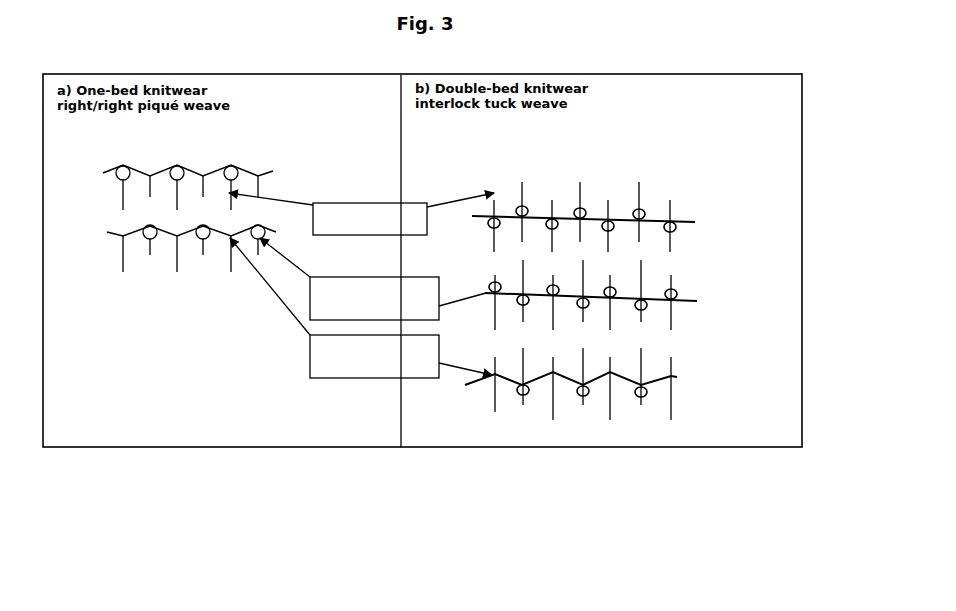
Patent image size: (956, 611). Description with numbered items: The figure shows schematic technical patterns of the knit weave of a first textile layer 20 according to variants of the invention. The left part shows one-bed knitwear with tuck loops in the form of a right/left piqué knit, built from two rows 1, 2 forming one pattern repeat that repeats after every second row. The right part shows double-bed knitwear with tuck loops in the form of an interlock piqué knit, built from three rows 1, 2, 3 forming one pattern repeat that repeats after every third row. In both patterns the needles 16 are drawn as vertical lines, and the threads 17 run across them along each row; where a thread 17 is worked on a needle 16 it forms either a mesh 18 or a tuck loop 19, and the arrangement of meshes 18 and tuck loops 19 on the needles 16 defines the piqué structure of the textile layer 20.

In FIG. 3a, the first row 1 is at (188, 172).
In FIG. 3b, the first row 1 is at (595, 208).
In FIG. 3a, the second row 2 is at (183, 248).
In FIG. 3b, the second row 2 is at (601, 295).
In FIG. 3b, the third row 3 is at (591, 384).
In FIG. 3a, the needles 16 is at (361, 214).
In FIG. 3a, the threads 17 is at (255, 170).
In FIG. 3b, the threads 17 is at (685, 210).
In FIG. 3a, the meshes 18 is at (373, 279).
In FIG. 3a, the tuck loops 19 is at (361, 308).
In FIG. 3b, the textile layer 20 is at (569, 473).